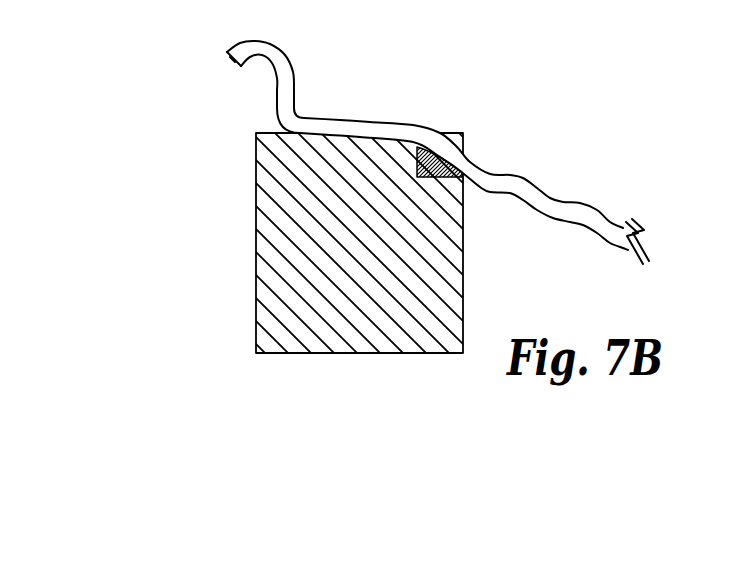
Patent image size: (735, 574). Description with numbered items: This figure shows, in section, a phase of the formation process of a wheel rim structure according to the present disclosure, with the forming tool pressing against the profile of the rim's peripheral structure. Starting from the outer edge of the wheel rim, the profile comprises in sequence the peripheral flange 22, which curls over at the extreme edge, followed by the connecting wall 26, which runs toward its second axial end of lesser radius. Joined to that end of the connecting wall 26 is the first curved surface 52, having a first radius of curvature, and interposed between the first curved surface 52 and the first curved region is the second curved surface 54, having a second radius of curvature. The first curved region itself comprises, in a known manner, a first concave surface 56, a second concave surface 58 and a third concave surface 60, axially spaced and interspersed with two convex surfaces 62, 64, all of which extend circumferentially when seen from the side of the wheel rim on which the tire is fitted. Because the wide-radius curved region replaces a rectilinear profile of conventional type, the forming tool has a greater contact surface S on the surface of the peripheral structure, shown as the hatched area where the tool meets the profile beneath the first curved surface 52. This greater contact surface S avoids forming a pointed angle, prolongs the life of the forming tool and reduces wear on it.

The peripheral flange 22 is at (226, 59).
The connecting wall 26 is at (332, 118).
The contact surface S is at (421, 161).
The first curved surface 52 is at (437, 131).
The second curved surface 54 is at (463, 142).
The first concave surface 56 is at (490, 172).
The second concave surface 58 is at (556, 200).
The third concave surface 60 is at (622, 228).
The convex surface 62 is at (526, 178).
The convex surface 64 is at (591, 208).